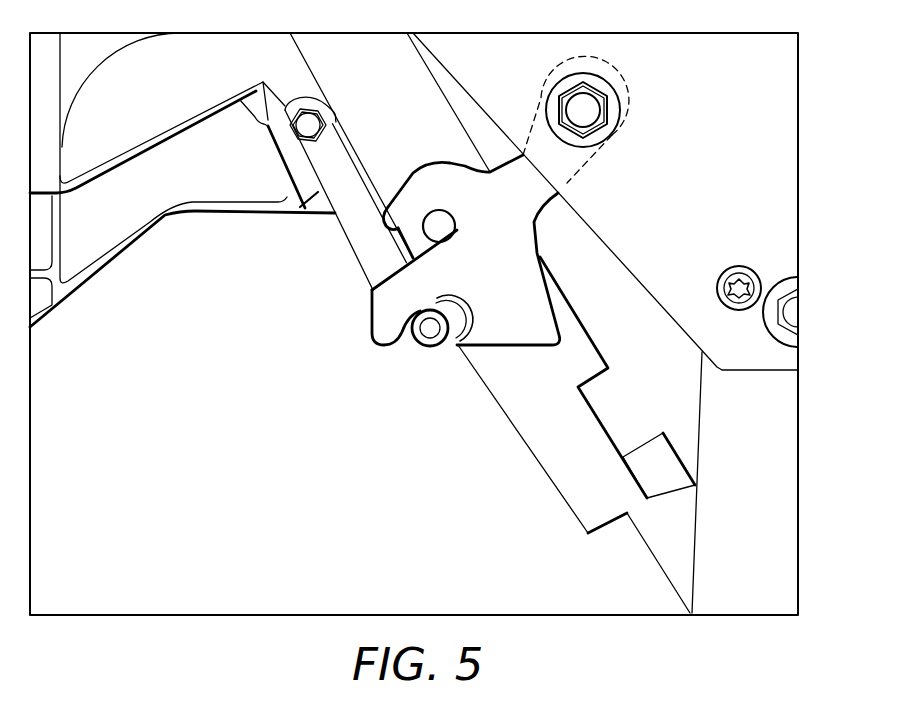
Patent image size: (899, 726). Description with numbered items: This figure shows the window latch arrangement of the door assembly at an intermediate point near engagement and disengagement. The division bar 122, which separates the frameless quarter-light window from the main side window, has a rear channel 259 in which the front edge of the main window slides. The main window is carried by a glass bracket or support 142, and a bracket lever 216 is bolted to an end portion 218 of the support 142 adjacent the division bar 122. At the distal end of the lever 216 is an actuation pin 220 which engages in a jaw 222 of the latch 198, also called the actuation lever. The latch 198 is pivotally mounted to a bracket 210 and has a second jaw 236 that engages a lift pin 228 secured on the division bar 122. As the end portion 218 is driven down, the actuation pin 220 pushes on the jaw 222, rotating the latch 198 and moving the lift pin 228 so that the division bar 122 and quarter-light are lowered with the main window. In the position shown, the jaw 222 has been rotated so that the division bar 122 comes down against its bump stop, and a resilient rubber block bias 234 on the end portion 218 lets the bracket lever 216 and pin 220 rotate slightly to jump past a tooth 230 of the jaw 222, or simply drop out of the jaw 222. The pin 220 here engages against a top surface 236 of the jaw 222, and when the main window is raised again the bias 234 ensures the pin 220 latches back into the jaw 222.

The division bar 122 is at (422, 133).
The glass bracket or support 142 is at (102, 242).
The latch 198 is at (510, 256).
The bracket 210 is at (641, 224).
The bracket lever 216 is at (373, 207).
The end portion 218 is at (178, 180).
The actuation pin 220 is at (425, 330).
The jaw 222 is at (467, 300).
The lift pin 228 is at (449, 213).
The tooth 230 is at (450, 337).
The resilient rubber block bias 234 is at (310, 214).
The second jaw 236 is at (372, 317).
The rear channel 259 is at (322, 84).